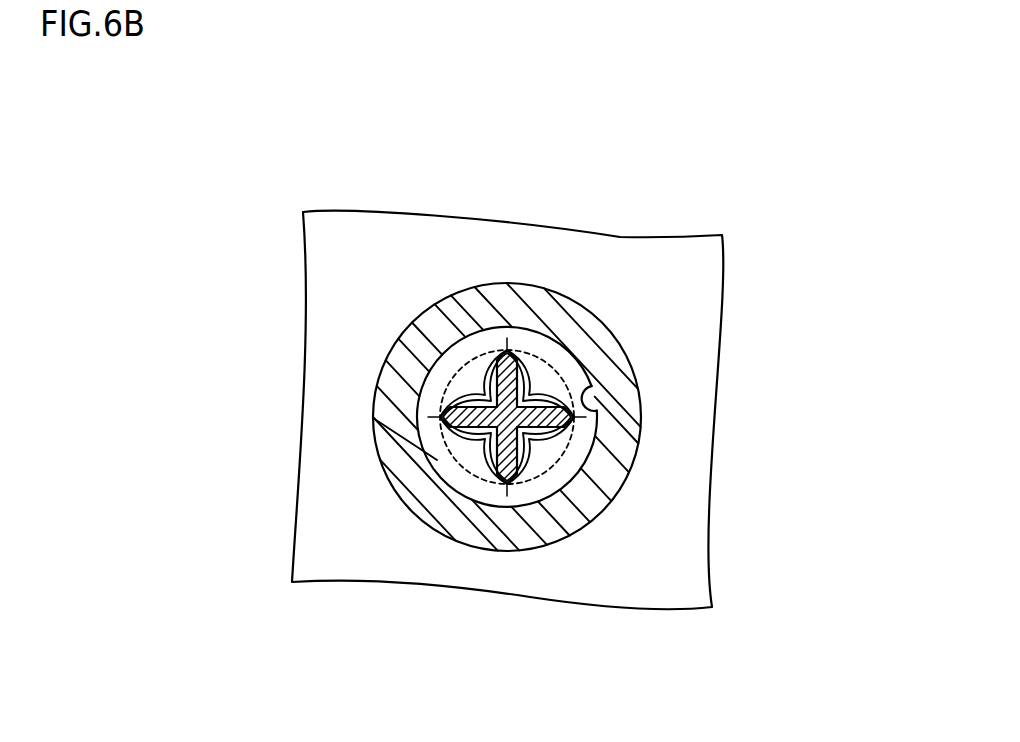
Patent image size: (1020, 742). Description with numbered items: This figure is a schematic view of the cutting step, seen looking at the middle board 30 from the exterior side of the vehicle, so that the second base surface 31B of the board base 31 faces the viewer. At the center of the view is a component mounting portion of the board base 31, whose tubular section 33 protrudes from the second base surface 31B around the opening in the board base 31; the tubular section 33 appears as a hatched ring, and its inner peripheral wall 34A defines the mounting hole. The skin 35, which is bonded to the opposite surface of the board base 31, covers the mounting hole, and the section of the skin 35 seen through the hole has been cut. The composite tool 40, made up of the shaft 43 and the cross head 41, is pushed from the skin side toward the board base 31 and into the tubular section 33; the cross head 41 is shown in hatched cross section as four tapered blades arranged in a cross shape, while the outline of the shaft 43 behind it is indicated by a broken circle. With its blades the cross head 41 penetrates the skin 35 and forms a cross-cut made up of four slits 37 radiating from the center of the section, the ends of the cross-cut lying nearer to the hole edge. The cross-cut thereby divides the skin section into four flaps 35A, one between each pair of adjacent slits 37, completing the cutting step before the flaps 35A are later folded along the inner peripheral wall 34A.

The middle board 30 is at (685, 190).
The board base 31 is at (680, 258).
The second base surface 31B is at (345, 245).
The tubular section 33 is at (600, 348).
The inner peripheral wall 34A is at (604, 418).
The skin 35 is at (437, 458).
The flaps 35A is at (548, 372).
The slits 37 is at (430, 418).
The composite tool 40 is at (624, 180).
The cross head 41 is at (543, 377).
The shaft 43 is at (470, 358).